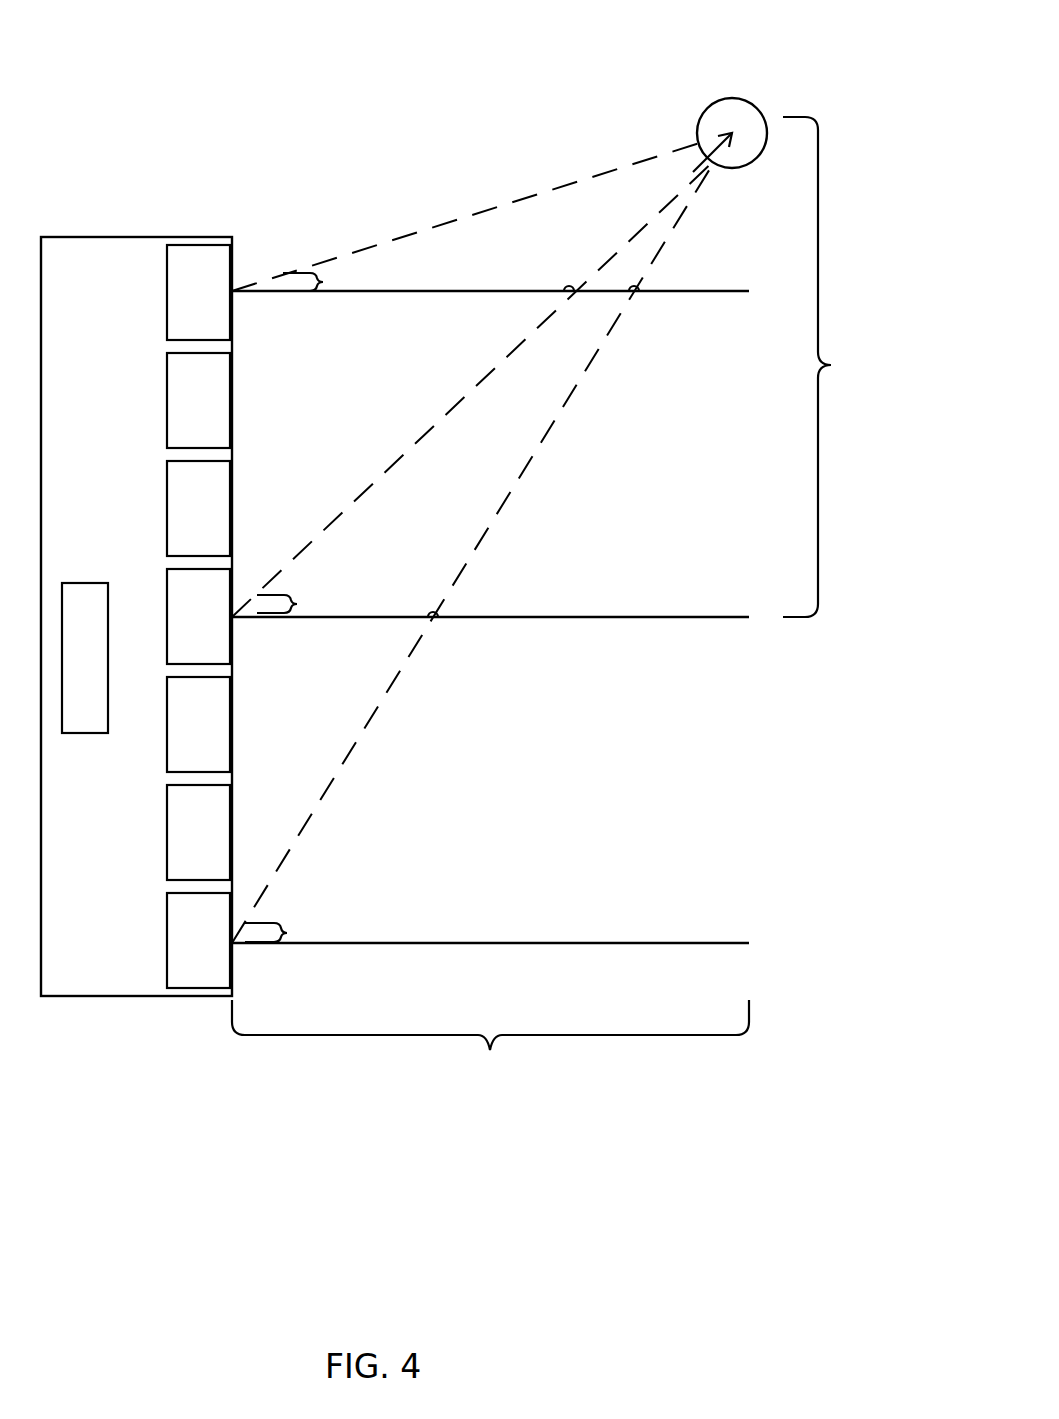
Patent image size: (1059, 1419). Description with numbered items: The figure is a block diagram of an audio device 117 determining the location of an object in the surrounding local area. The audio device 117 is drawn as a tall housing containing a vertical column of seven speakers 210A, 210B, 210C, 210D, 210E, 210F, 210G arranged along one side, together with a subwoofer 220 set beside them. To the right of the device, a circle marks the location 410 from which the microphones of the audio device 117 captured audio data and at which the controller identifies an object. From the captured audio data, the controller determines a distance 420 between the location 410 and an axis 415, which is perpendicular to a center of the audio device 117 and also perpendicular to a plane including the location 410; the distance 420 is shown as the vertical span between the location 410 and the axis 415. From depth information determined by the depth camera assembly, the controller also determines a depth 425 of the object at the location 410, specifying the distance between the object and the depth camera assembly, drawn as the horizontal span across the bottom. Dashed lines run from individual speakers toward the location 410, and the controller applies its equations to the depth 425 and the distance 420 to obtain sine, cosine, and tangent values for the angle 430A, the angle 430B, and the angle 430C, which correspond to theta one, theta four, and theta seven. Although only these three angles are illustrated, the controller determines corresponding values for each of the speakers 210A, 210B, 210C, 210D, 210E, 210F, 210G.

The audio device 117 is at (137, 236).
The speaker 210A is at (222, 916).
The speaker 210B is at (222, 808).
The speaker 210C is at (222, 700).
The speaker 210D is at (222, 592).
The speaker 210E is at (222, 485).
The speaker 210F is at (222, 377).
The speaker 210G is at (222, 268).
The subwoofer 220 is at (107, 638).
The location 410 is at (733, 97).
The axis 415 is at (645, 614).
The distance 420 is at (836, 367).
The depth 425 is at (490, 1047).
The angle 430A is at (331, 282).
The angle 430B is at (306, 604).
The angle 430C is at (295, 933).